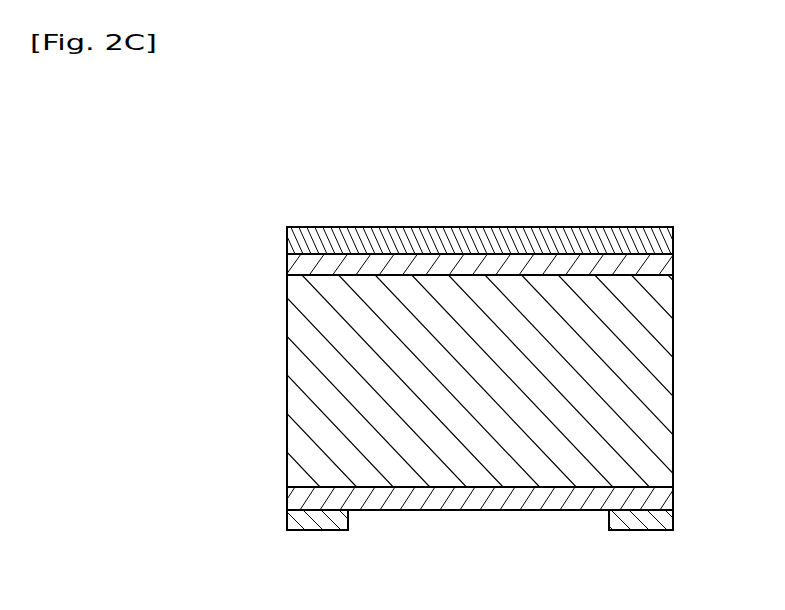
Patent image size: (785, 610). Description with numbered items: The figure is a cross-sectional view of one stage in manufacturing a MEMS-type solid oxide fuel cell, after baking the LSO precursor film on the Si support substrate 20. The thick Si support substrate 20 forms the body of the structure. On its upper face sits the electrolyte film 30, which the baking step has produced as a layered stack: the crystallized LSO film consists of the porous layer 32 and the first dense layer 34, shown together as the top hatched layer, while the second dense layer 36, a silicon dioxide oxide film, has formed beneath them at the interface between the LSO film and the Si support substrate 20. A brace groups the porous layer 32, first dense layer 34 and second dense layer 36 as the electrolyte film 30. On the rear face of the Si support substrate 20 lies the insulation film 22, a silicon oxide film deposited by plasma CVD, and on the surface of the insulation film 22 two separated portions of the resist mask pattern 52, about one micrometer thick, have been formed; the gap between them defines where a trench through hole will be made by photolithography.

The electrolyte film 30 is at (499, 213).
The porous layer 32 is at (479, 222).
The first dense layer 34 is at (543, 227).
The second dense layer 36 is at (610, 193).
The Si support substrate 20 is at (655, 398).
The insulation film 22 is at (655, 499).
The resist mask pattern 52 is at (330, 523).